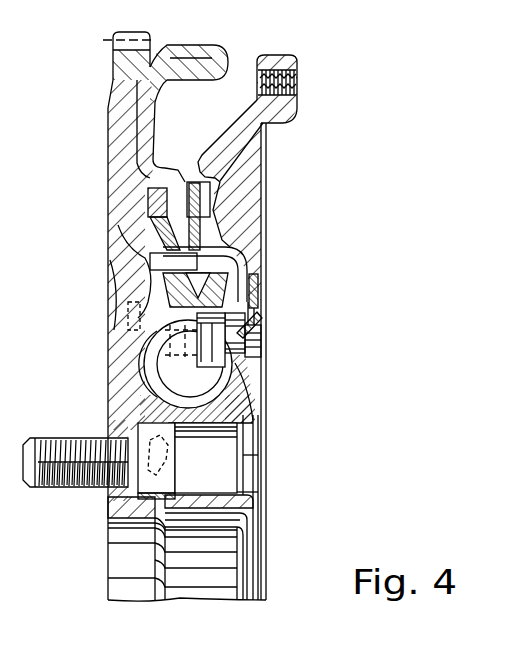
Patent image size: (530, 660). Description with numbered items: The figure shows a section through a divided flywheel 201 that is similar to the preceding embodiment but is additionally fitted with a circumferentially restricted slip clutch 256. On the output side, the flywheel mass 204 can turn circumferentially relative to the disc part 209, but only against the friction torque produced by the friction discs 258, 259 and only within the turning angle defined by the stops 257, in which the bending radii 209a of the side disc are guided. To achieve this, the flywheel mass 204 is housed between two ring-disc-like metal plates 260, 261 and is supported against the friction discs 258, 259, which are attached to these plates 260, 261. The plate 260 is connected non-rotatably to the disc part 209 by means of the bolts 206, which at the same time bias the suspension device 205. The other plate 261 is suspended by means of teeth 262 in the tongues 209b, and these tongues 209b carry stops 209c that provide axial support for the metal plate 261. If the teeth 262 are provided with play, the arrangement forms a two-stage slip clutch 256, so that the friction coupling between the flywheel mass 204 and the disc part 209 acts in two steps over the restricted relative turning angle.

The divided flywheel 201 is at (340, 58).
The flywheel mass 204 is at (247, 181).
The suspension device 205 is at (138, 313).
The bolts 206 is at (238, 344).
The disc part 209 is at (245, 392).
The bending radii 209a is at (240, 260).
The tongues 209b is at (135, 268).
The stops 209c is at (150, 282).
The slip clutch 256 is at (282, 317).
The stops 257 is at (215, 237).
The friction disc 258 is at (200, 193).
The friction disc 259 is at (258, 286).
The metal plate 260 is at (250, 313).
The metal plate 261 is at (188, 180).
The teeth 262 is at (160, 272).